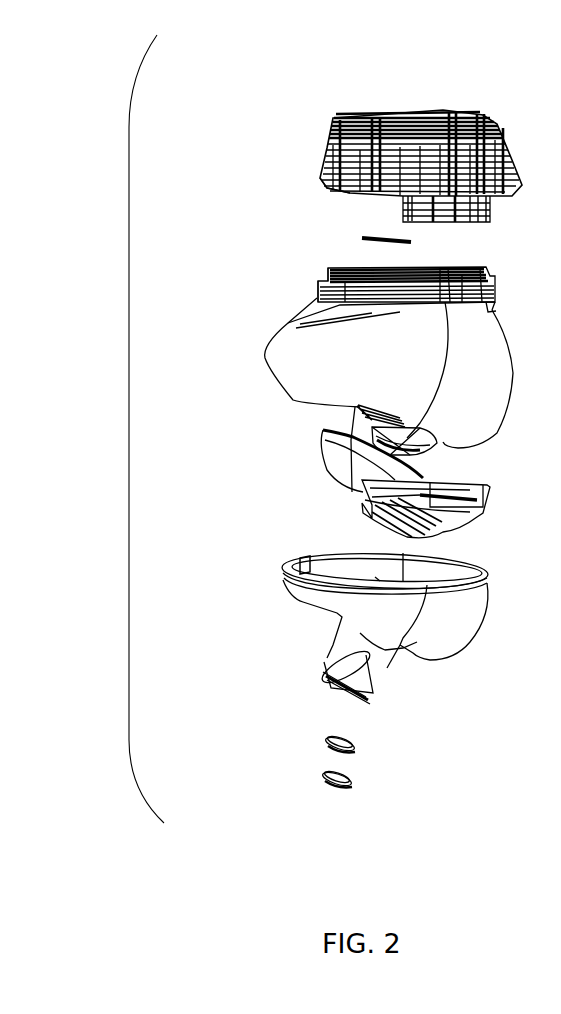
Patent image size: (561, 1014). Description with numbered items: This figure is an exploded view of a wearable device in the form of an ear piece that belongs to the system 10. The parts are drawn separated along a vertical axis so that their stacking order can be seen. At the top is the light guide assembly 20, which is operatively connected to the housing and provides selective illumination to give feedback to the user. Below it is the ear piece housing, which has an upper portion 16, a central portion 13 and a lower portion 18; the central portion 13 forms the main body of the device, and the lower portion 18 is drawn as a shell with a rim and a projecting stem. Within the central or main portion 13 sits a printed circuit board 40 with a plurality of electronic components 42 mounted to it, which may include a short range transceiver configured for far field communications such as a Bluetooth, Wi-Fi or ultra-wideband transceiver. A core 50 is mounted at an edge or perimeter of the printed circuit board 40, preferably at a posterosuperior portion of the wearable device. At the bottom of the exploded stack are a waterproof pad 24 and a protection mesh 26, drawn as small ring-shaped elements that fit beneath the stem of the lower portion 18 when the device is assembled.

The system 10 is at (129, 453).
The central portion 13 is at (265, 342).
The upper portion 16 is at (318, 168).
The lower portion 18 is at (315, 400).
The light guide assembly 20 is at (466, 104).
The waterproof pad 24 is at (360, 748).
The protection mesh 26 is at (358, 784).
The printed circuit board 40 is at (345, 270).
The electronic components 42 is at (376, 270).
The core 50 is at (318, 278).